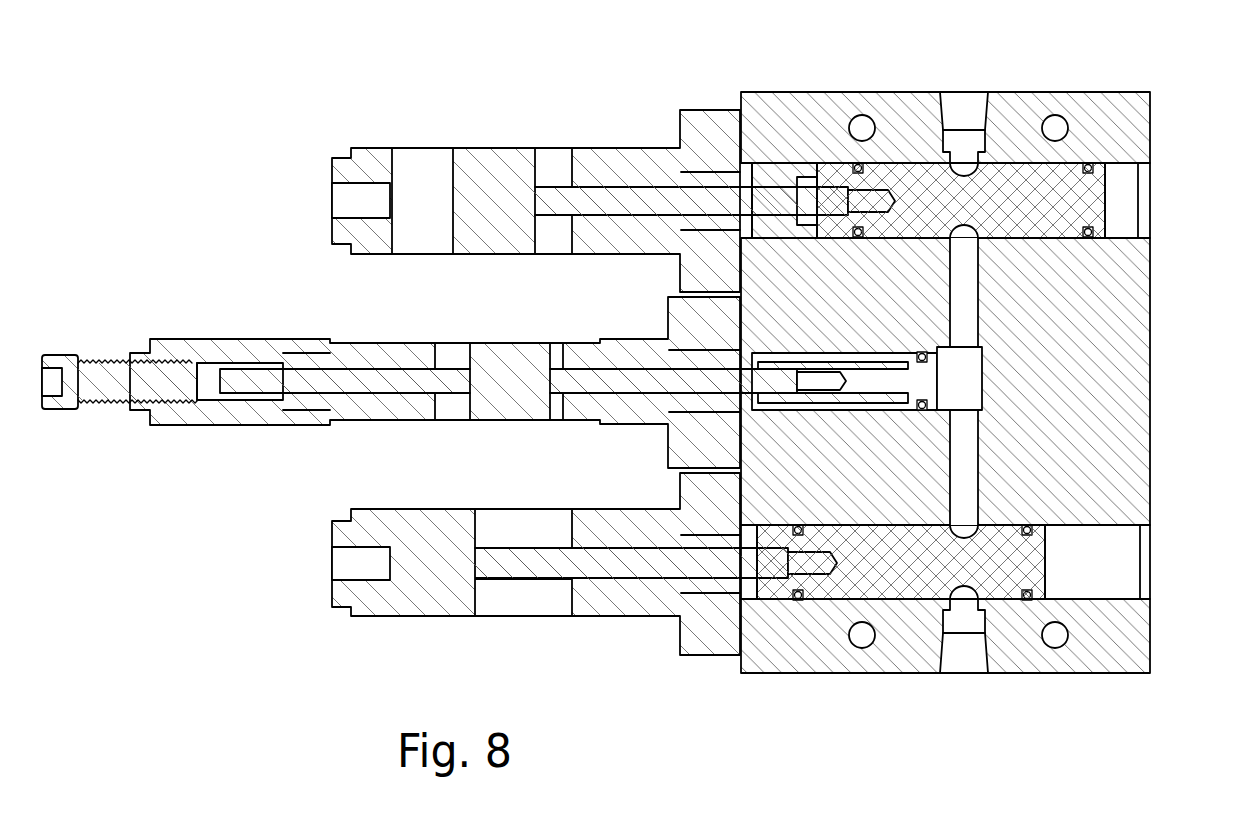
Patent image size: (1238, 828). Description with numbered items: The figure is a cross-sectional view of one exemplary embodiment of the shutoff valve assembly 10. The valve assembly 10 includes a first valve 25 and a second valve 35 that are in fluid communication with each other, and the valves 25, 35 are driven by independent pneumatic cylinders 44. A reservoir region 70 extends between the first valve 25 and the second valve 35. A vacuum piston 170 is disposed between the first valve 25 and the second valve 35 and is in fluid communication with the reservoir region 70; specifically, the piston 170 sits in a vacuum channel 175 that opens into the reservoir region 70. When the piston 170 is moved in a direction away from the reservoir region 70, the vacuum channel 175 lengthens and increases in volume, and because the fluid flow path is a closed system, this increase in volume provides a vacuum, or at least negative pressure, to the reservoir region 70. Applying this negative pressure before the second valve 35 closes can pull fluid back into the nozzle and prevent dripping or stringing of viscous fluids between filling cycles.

The valve assembly 10 is at (931, 82).
The first valve 25 is at (1093, 198).
The second valve 35 is at (997, 565).
The pneumatic cylinders 44 is at (385, 148).
The reservoir region 70 is at (965, 458).
The vacuum piston 170 is at (935, 352).
The vacuum channel 175 is at (965, 387).